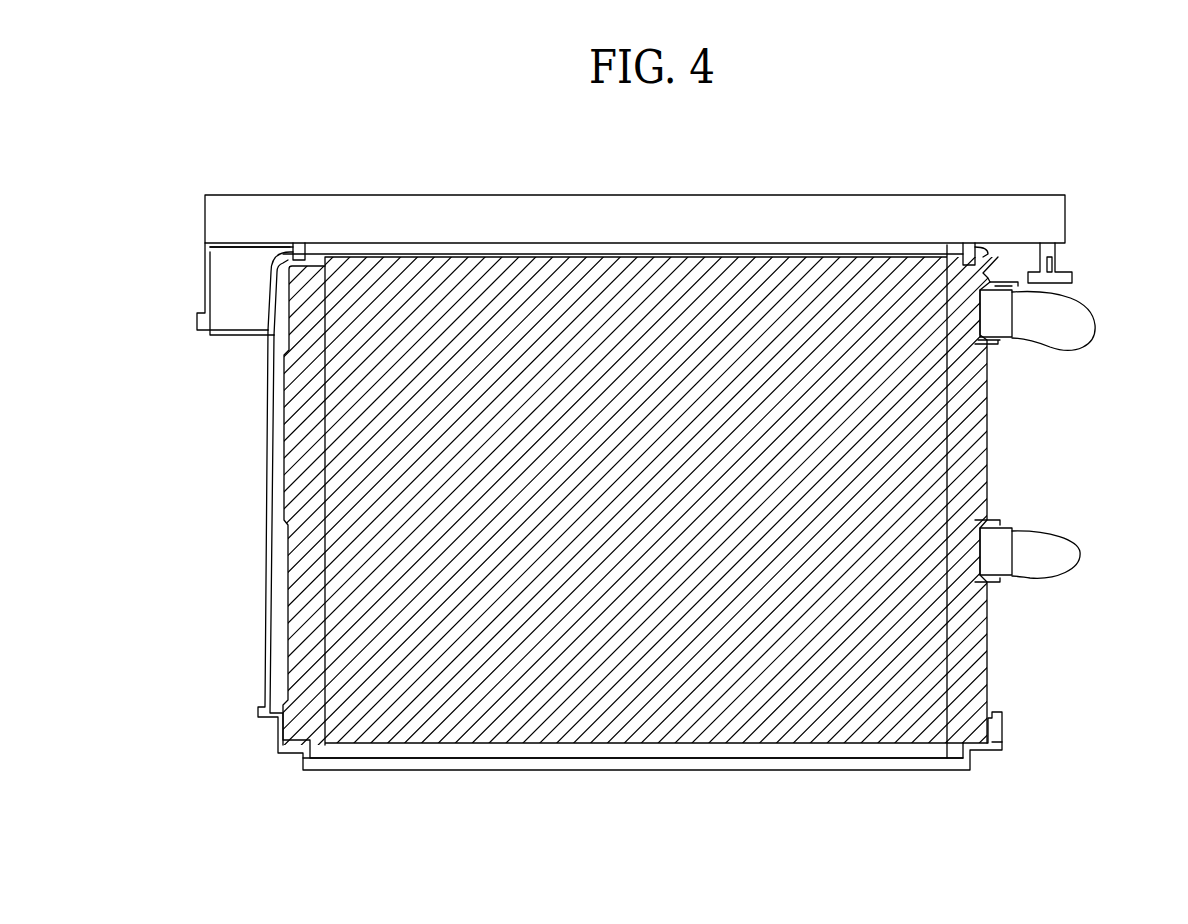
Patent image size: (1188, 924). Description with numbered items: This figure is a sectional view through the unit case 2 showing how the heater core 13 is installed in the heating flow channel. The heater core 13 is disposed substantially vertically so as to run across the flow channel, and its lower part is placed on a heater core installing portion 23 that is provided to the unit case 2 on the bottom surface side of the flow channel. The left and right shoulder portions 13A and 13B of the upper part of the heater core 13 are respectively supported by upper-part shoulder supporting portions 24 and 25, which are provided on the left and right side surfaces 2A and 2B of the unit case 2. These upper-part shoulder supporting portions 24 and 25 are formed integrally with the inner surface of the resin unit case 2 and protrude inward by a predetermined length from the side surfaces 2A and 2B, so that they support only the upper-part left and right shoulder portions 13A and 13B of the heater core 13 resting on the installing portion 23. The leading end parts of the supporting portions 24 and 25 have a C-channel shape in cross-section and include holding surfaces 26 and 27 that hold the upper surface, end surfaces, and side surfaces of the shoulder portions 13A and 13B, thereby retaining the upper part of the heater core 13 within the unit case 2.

The unit case 2 is at (270, 545).
The side surface of the unit case 2A is at (206, 286).
The side surface of the unit case 2B is at (1067, 215).
The heater core 13 is at (735, 712).
The left shoulder portion of the heater core 13A is at (300, 303).
The right shoulder portion of the heater core 13B is at (977, 298).
The heater core installing portion 23 is at (530, 770).
The upper-part shoulder supporting portion 24 is at (263, 243).
The upper-part shoulder supporting portion 25 is at (1013, 245).
The holding surface 26 is at (338, 243).
The holding surface 27 is at (273, 263).